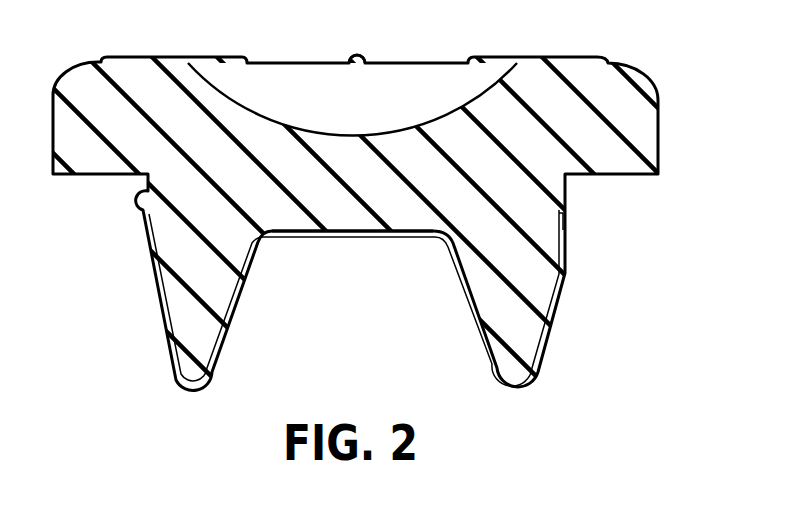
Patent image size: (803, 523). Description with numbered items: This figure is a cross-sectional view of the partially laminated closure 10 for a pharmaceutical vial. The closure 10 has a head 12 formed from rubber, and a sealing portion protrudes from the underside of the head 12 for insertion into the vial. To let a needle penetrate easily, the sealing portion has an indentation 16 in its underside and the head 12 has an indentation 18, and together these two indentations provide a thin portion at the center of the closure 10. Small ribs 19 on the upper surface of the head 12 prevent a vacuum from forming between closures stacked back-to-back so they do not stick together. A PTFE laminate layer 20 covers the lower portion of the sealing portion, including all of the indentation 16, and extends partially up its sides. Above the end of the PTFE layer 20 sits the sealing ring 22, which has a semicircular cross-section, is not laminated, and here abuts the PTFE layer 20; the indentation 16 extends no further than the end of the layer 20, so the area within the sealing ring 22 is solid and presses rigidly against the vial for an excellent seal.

The closure 10 is at (70, 310).
The head 12 is at (648, 88).
The indentation 16 is at (281, 240).
The indentation 18 is at (297, 88).
The ribs 19 is at (360, 56).
The PTFE laminate layer 20 is at (564, 297).
The sealing ring 22 is at (568, 204).